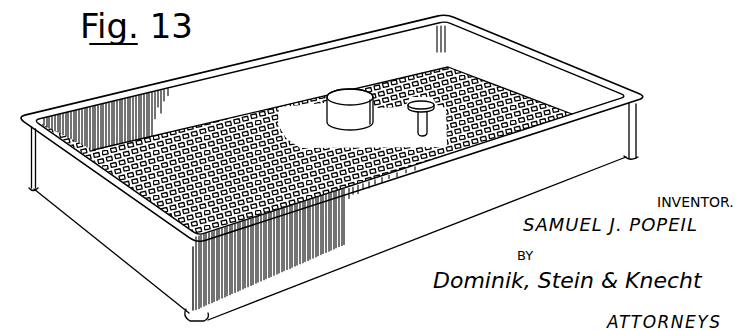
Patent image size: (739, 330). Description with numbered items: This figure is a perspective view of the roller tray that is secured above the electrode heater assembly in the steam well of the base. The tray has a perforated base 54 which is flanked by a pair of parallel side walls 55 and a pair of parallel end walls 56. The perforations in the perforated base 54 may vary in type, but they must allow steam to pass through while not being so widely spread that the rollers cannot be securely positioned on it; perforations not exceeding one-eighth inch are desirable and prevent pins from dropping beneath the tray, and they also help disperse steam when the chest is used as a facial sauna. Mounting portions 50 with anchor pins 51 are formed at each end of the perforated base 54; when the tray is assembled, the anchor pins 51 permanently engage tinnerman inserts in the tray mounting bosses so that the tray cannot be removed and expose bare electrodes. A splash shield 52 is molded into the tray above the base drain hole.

The mounting portion 50 is at (430, 103).
The anchor pin 51 is at (418, 128).
The splash shield 52 is at (342, 120).
The perforated base 54 is at (492, 106).
The side wall 55 is at (590, 141).
The end wall 56 is at (573, 79).